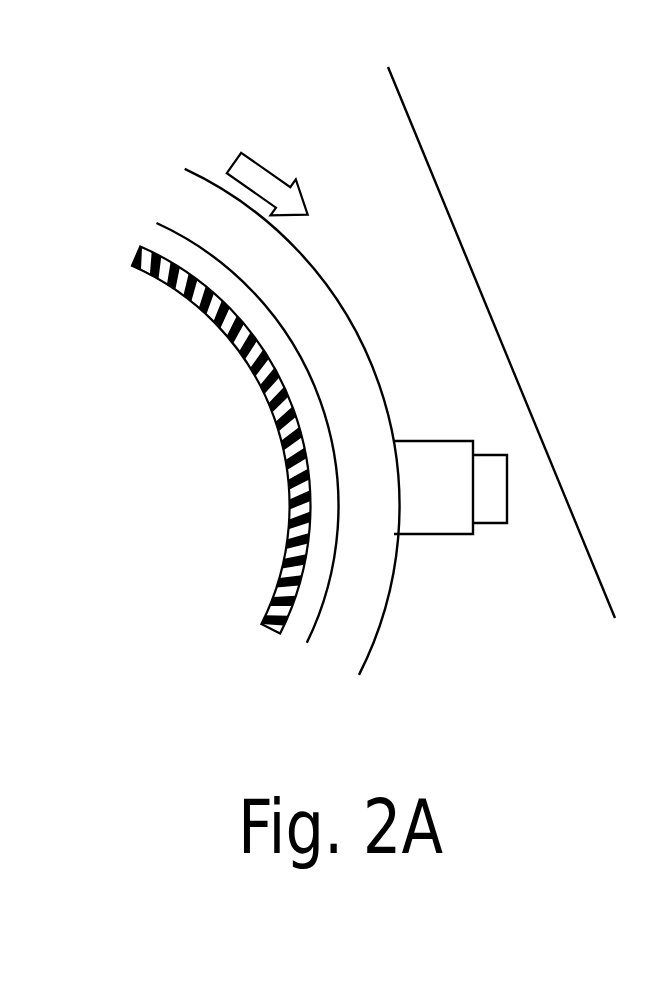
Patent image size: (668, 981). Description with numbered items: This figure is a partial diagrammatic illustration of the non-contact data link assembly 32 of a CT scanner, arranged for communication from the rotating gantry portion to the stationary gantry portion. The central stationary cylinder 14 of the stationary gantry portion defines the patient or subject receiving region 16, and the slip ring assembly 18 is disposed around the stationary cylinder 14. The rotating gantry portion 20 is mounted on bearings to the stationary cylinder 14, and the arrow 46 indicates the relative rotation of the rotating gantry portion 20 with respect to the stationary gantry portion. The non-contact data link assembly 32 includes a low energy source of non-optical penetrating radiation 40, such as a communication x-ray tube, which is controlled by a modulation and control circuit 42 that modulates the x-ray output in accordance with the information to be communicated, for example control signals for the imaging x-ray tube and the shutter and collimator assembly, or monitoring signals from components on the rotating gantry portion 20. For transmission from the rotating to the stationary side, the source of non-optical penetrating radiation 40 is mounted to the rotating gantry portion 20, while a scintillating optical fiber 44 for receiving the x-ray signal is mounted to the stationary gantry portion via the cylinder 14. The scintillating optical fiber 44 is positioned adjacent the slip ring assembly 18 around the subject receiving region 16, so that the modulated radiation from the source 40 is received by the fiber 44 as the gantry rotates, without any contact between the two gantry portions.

The central stationary cylinder 14 is at (237, 335).
The subject receiving region 16 is at (116, 473).
The slip ring assembly 18 is at (327, 350).
The rotating gantry portion 20 is at (458, 391).
The non-contact data link assembly 32 is at (215, 147).
The low energy source of non-optical penetrating radiation 40 is at (428, 493).
The modulation and control circuit 42 is at (490, 489).
The scintillating optical fiber 44 is at (313, 580).
The arrow 46 is at (262, 182).